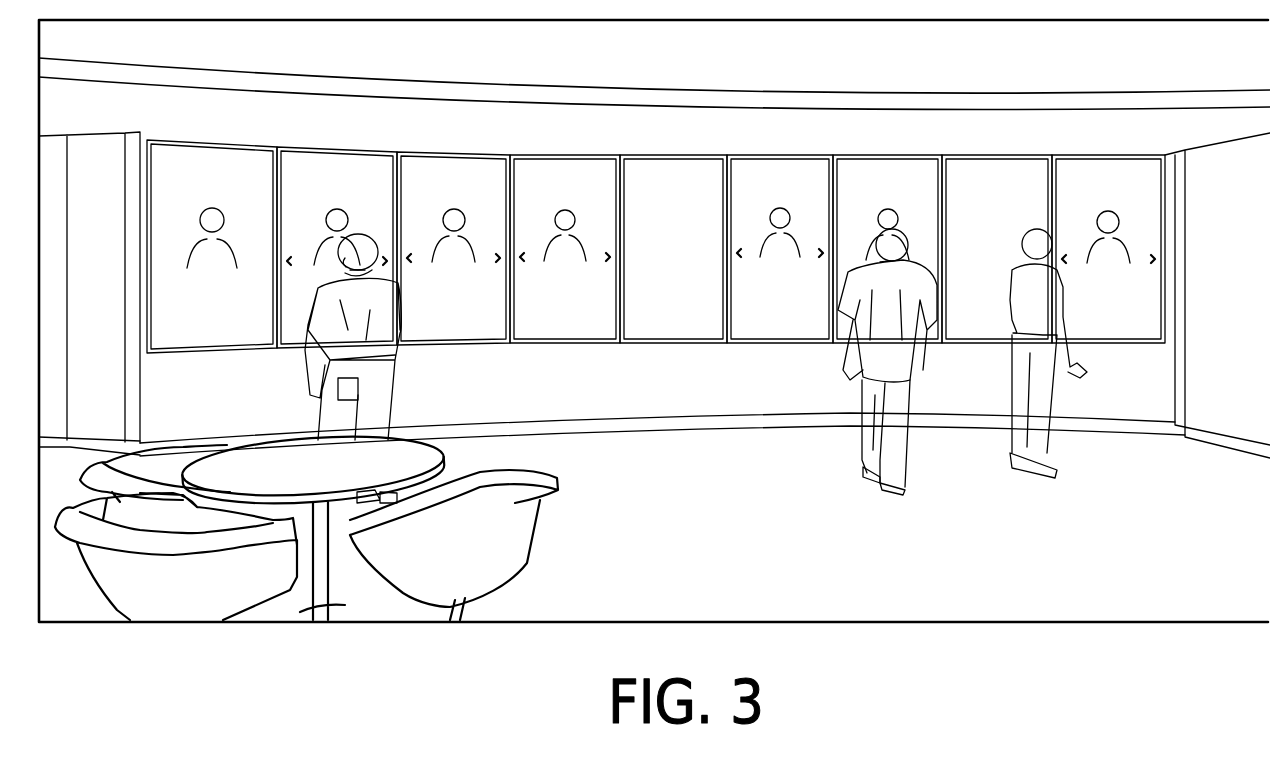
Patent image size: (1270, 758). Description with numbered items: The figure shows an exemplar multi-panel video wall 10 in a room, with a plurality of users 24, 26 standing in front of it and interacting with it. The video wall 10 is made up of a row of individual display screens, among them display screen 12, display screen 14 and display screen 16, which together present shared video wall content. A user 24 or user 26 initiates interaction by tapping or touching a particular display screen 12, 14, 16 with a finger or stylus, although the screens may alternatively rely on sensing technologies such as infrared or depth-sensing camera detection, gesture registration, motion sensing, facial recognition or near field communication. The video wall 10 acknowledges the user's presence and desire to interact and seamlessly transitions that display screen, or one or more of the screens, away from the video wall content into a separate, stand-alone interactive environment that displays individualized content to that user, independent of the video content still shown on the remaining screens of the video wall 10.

The video wall 10 is at (790, 120).
The display screen 12 is at (212, 165).
The display screen 14 is at (334, 170).
The display screen 16 is at (565, 178).
The user 24 is at (393, 378).
The user 26 is at (855, 455).